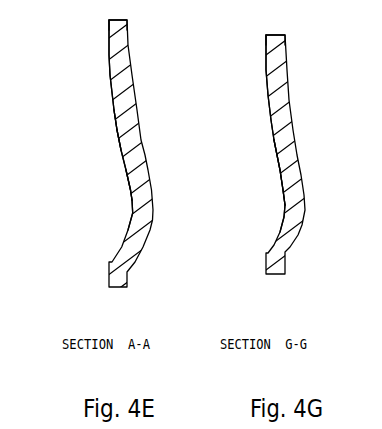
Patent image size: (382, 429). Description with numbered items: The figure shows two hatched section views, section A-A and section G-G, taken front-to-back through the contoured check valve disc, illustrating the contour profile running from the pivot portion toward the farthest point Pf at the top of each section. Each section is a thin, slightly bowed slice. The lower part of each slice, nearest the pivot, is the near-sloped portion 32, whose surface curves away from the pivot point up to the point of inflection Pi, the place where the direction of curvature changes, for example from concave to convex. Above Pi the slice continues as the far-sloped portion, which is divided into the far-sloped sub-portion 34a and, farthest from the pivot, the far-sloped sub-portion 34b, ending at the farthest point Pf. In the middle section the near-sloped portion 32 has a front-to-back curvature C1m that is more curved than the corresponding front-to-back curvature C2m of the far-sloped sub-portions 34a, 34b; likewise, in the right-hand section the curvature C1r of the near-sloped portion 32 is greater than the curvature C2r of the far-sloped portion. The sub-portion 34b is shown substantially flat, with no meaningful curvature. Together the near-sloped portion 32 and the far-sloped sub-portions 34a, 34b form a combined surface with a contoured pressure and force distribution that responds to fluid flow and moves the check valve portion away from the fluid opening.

In FIG. 4E, the near-sloped portion 32 is at (102, 226).
In FIG. 4G, the near-sloped portion 32 is at (252, 231).
In FIG. 4E, the far-sloped sub-portion 34a is at (92, 121).
In FIG. 4G, the far-sloped sub-portion 34a is at (254, 132).
In FIG. 4E, the far-sloped sub-portion 34b is at (93, 68).
In FIG. 4G, the far-sloped sub-portion 34b is at (248, 88).
In FIG. 4E, the farthest point Pf is at (105, 17).
In FIG. 4G, the farthest point Pf is at (262, 35).
In FIG. 4E, the point of inflection Pi is at (110, 189).
In FIG. 4G, the point of inflection Pi is at (260, 190).
In FIG. 4E, the front-to-back curvature of near-sloped portion C1m is at (133, 216).
In FIG. 4E, the front-to-back curvature of far-sloped portion C2m is at (117, 133).
In FIG. 4G, the front-to-back curvature of near-sloped portion C1r is at (283, 215).
In FIG. 4G, the front-to-back curvature of far-sloped portion C2r is at (273, 147).